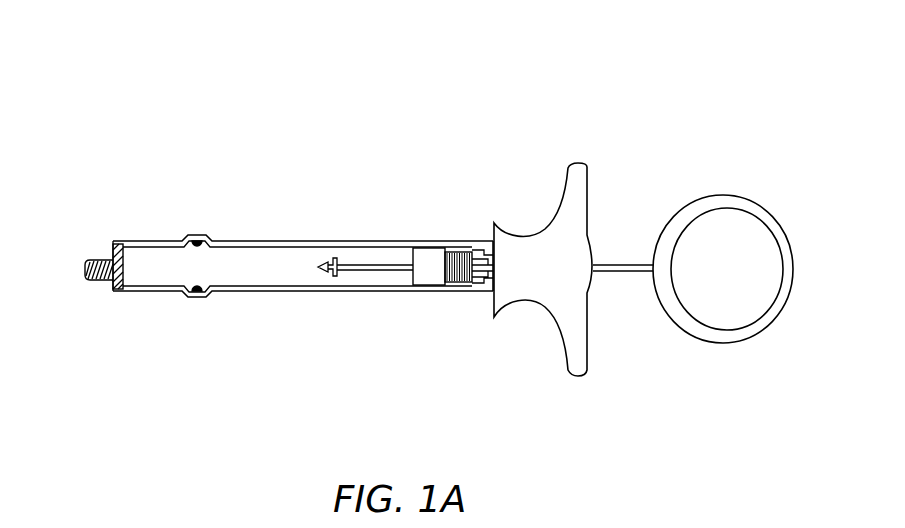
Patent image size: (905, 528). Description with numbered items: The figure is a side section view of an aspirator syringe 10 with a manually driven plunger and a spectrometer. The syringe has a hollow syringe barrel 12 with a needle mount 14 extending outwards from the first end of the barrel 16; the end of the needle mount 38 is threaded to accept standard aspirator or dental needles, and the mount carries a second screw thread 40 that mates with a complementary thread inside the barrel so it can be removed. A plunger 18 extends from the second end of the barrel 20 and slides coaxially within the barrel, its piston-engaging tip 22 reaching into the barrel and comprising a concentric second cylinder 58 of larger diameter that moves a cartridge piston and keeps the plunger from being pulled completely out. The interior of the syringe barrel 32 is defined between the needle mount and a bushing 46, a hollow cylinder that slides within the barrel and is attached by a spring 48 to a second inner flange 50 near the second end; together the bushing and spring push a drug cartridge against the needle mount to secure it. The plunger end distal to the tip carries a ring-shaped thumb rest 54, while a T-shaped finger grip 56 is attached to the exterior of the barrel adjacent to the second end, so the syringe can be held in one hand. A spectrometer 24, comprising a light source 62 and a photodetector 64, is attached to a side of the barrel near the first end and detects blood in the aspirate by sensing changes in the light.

The aspirator syringe 10 is at (102, 60).
The syringe barrel 12 is at (392, 240).
The needle mount 14 is at (107, 296).
The first end of the barrel 16 is at (133, 240).
The plunger 18 is at (377, 273).
The second end of the barrel 20 is at (498, 203).
The piston-engaging tip 22 is at (320, 262).
The spectrometer 24 is at (209, 220).
The interior of the syringe barrel 32 is at (270, 278).
The end of the needle mount 38 is at (98, 280).
The second screw thread 40 is at (116, 249).
The bushing 46 is at (432, 268).
The spring 48 is at (458, 282).
The second inner flange 50 is at (480, 250).
The thumb rest 54 is at (753, 212).
The finger grip 56 is at (580, 374).
The second cylinder 58 is at (338, 277).
The light source 62 is at (195, 231).
The photodetector 64 is at (197, 299).